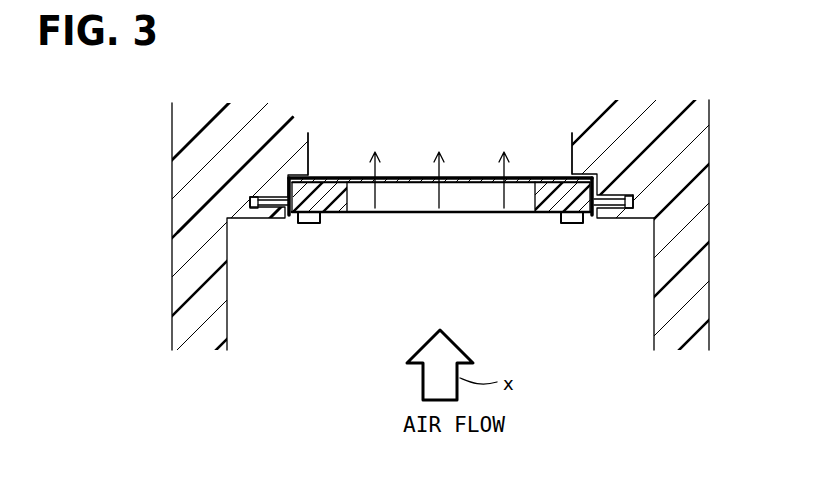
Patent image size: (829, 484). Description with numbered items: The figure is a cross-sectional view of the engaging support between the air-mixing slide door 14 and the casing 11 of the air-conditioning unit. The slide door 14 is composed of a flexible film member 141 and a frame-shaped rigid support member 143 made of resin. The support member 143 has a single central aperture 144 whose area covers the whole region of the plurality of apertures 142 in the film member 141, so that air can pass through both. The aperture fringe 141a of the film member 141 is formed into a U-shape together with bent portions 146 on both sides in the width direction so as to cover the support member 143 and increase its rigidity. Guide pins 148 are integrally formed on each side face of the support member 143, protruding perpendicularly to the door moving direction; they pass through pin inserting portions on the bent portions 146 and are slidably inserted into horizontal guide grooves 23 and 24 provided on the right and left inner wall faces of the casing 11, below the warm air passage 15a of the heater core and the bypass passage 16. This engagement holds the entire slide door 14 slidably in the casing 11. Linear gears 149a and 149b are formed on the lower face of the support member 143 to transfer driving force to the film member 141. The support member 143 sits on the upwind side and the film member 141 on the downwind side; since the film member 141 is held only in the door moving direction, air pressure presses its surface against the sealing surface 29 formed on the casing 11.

The casing 11 is at (180, 213).
The air-mixing slide door 14 is at (417, 221).
The air passage 15a is at (444, 148).
The bypass passage 16 is at (440, 115).
The guide groove 23 is at (252, 196).
The guide groove 24 is at (620, 183).
The sealing surface 29 is at (307, 145).
The film member 141 is at (542, 177).
The aperture fringe 141a is at (465, 113).
The apertures 142 is at (365, 177).
The support member 143 is at (333, 214).
The aperture 144 is at (468, 205).
The bent portions 146 is at (342, 203).
The guide pins 148 is at (283, 198).
The linear gear 149a is at (573, 224).
The linear gear 149b is at (303, 224).